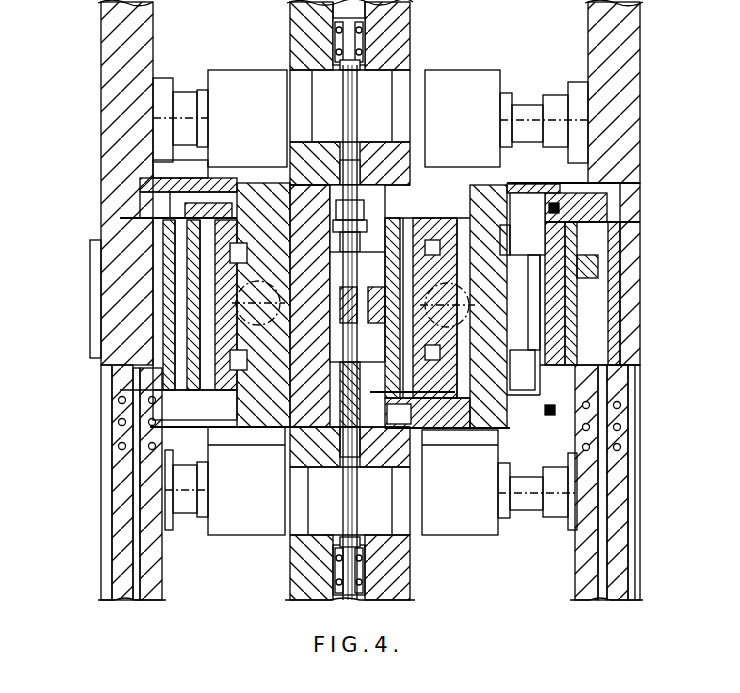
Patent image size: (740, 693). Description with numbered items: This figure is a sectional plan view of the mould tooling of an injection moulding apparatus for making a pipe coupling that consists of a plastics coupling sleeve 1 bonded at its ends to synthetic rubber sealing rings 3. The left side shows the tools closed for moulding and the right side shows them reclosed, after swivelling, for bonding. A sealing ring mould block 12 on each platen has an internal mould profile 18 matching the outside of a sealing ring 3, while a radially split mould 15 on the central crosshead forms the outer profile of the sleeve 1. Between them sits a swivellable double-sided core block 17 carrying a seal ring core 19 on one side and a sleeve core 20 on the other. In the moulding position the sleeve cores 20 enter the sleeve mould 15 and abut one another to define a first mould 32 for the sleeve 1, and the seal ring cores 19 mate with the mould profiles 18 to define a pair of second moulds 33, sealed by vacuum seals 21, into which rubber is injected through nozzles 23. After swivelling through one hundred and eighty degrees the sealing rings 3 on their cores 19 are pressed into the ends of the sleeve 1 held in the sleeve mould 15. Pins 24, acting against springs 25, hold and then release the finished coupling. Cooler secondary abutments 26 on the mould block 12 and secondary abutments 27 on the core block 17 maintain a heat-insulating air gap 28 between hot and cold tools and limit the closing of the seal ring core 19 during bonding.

The plastics coupling sleeve 1 is at (343, 266).
The sealing ring 3 is at (200, 248).
The sealing ring mould block 12 is at (530, 348).
The radially split mould 15 is at (362, 420).
The core block 17 is at (463, 418).
The internal mould profile 18 is at (545, 258).
The seal ring core 19 is at (400, 345).
The sleeve core 20 is at (344, 320).
The vacuum seal 21 is at (548, 207).
The nozzle 23 is at (160, 387).
The pin 24 is at (352, 172).
The spring 25 is at (338, 48).
The secondary abutment 26 is at (518, 427).
The secondary abutment 27 is at (418, 185).
The heat-insulating air gap 28 is at (391, 383).
The first mould 32 is at (305, 393).
The second mould 33 is at (83, 335).